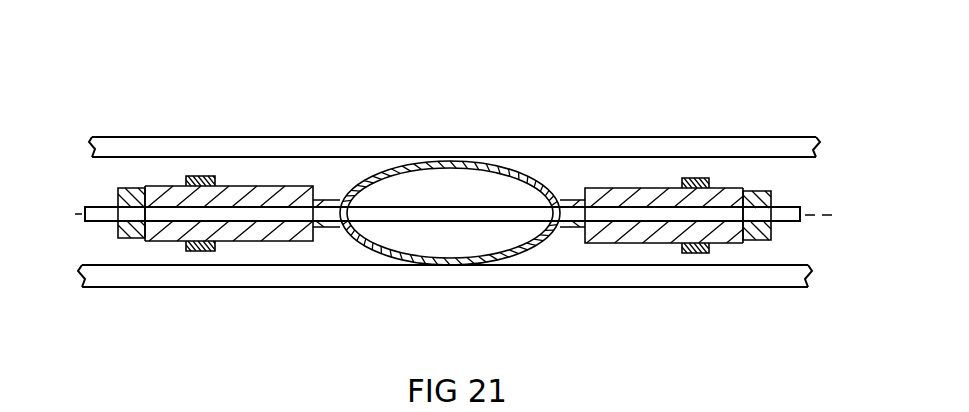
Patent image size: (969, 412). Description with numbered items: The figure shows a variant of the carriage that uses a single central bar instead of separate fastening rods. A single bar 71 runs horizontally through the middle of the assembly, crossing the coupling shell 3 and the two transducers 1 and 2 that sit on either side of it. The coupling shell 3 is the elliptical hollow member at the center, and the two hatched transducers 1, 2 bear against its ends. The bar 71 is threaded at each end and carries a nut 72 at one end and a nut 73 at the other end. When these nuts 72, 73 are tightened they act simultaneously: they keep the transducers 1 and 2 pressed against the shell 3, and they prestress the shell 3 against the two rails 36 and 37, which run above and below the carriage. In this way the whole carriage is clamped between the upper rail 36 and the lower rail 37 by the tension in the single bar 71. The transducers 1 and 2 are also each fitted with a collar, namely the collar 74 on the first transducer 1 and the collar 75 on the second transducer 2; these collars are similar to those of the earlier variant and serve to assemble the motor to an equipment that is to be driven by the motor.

The transducer 1 is at (273, 190).
The transducer 2 is at (643, 188).
The coupling shell 3 is at (517, 180).
The rail 36 is at (249, 147).
The rail 37 is at (283, 275).
The single bar 71 is at (463, 217).
The nut 72 is at (132, 190).
The nut 73 is at (760, 191).
The collar 74 is at (195, 176).
The collar 75 is at (695, 178).